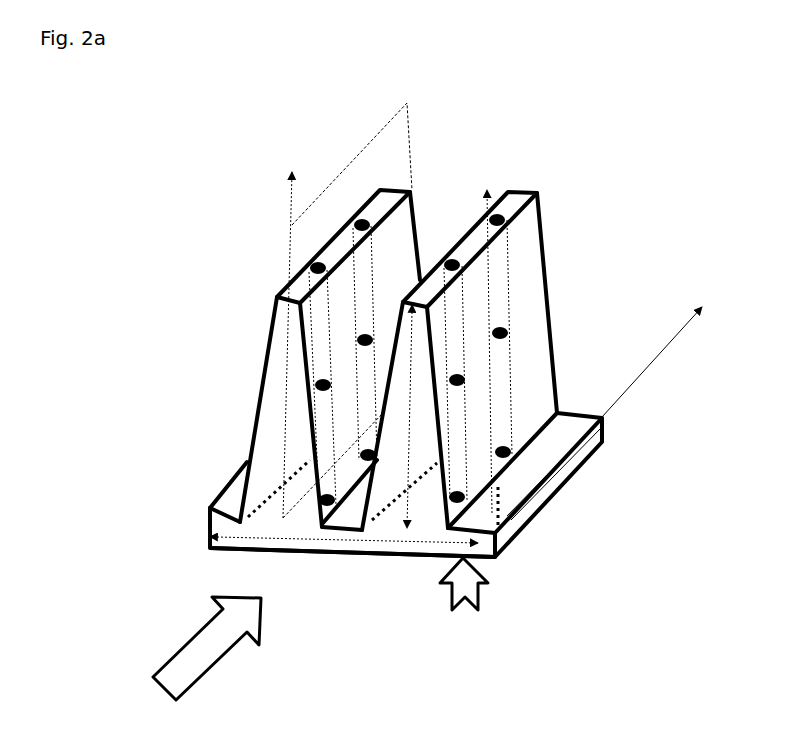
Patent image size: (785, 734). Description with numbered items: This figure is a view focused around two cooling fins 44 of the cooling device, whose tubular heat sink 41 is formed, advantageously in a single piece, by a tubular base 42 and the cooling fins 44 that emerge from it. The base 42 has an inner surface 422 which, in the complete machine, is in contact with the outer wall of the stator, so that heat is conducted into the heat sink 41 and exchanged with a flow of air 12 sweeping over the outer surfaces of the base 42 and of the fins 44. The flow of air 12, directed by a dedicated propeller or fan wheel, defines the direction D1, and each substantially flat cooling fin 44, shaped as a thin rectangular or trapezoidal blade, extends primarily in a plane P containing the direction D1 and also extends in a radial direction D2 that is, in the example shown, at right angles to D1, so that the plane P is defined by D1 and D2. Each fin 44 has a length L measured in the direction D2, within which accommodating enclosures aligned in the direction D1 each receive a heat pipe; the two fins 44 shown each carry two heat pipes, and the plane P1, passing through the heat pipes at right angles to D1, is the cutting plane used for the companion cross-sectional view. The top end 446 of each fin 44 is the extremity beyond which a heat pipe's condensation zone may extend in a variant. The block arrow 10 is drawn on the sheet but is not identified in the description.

The heat sink 41 is at (213, 285).
The base 42 is at (207, 510).
The inner surface 422 is at (242, 557).
The cooling fin 44 is at (440, 200).
The top end 446 is at (517, 193).
The light 10 is at (490, 582).
The flow of air 12 is at (200, 633).
The plane P is at (375, 135).
The plane P1 is at (490, 548).
The length L is at (416, 420).
The direction D1 is at (671, 346).
The direction D2 is at (262, 343).